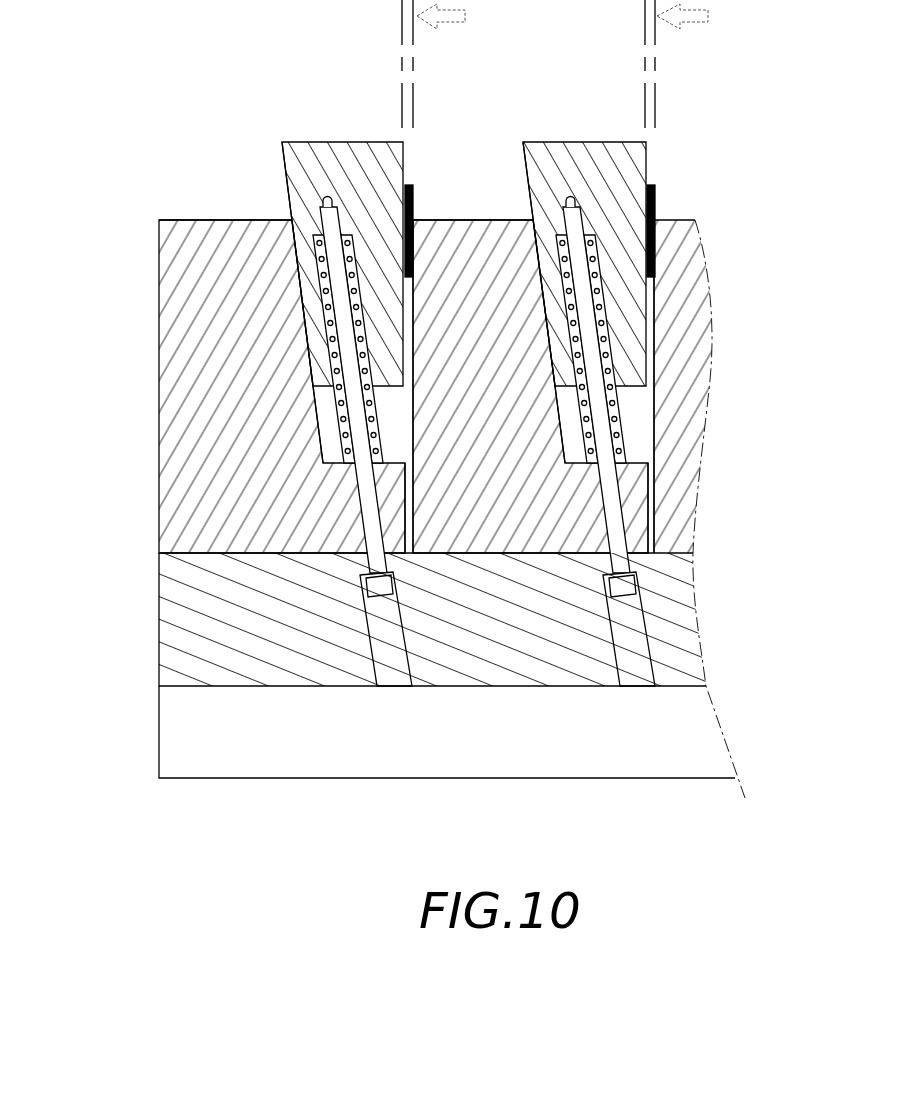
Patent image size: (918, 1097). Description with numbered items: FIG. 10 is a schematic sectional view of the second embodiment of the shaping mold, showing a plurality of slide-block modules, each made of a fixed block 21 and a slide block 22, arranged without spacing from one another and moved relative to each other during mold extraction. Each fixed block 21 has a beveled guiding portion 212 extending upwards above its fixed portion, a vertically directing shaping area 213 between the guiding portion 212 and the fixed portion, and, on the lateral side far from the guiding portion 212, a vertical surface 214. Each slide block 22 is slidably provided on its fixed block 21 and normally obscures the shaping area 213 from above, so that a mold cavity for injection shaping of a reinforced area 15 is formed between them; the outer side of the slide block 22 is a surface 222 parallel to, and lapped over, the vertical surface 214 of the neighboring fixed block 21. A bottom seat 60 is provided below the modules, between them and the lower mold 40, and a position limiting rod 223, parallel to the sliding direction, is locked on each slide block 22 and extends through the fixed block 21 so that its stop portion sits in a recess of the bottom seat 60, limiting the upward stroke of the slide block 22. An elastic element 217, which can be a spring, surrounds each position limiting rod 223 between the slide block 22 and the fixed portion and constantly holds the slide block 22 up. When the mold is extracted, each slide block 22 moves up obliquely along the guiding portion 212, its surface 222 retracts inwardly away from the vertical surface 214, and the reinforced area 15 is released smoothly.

The reinforced area 15 is at (414, 197).
The fixed block 21 is at (207, 345).
The slide block 22 is at (308, 141).
The lower mold 40 is at (160, 750).
The bottom seat 60 is at (190, 623).
The guiding portion 212 is at (282, 174).
The shaping area 213 is at (650, 512).
The vertical surface 214 is at (157, 252).
The elastic element 217 is at (612, 407).
The surface 222 is at (406, 160).
The position limiting rod 223 is at (604, 445).